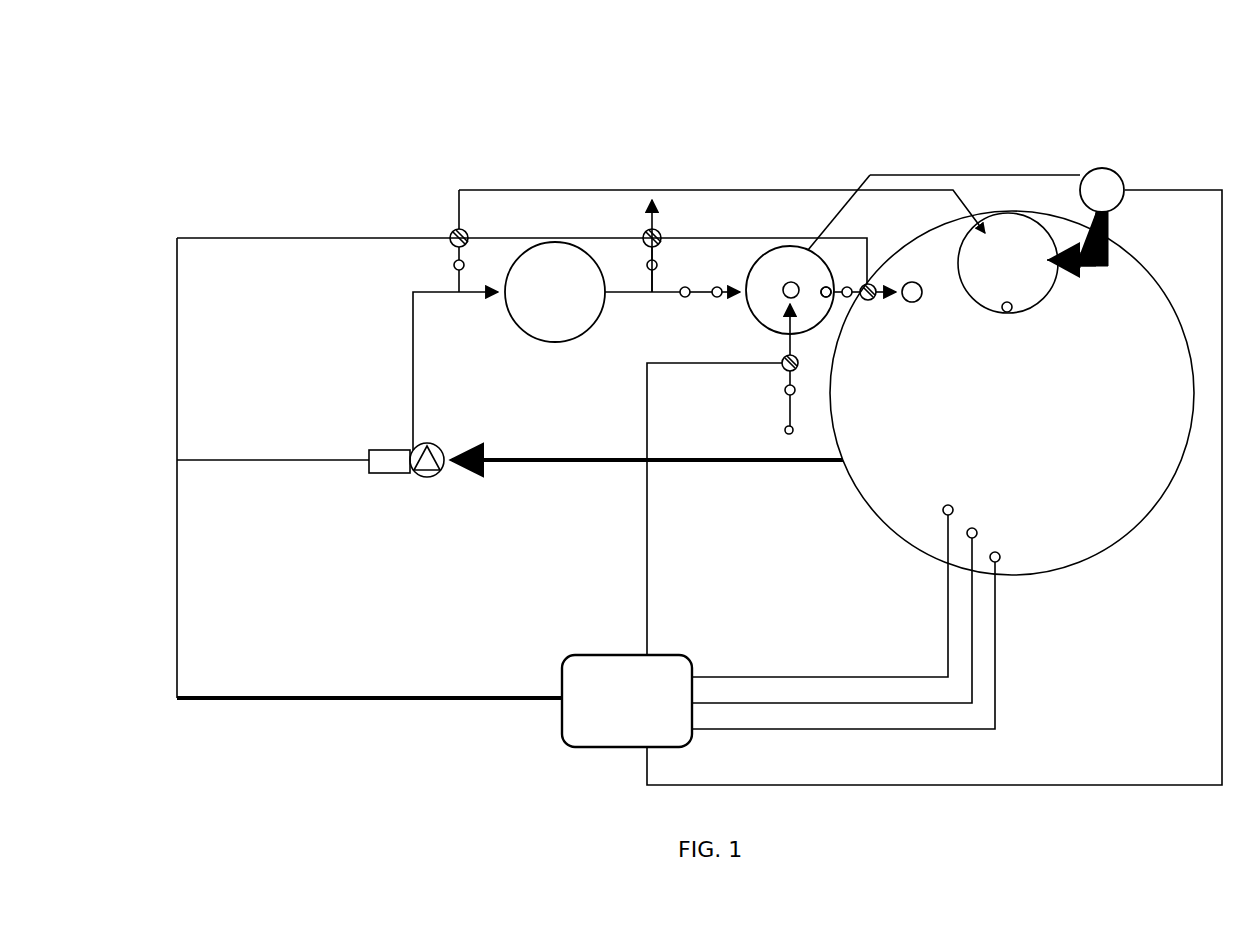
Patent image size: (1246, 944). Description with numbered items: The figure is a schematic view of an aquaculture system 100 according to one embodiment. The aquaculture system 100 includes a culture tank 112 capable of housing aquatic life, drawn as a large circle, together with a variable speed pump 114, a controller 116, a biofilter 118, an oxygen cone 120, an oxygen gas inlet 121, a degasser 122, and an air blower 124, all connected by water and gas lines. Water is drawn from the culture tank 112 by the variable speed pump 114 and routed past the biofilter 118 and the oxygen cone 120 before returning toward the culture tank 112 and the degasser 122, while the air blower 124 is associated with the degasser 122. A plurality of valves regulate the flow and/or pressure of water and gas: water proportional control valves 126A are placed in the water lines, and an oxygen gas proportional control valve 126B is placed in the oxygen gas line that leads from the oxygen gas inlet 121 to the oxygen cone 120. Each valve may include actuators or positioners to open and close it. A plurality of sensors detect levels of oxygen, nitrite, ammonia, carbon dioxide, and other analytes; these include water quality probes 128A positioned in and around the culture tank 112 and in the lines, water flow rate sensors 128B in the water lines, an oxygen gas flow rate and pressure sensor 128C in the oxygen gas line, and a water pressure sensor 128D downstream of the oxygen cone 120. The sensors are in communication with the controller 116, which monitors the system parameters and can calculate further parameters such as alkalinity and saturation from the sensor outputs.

The aquaculture system 100 is at (527, 94).
The culture tank 112 is at (1012, 393).
The variable speed pump 114 is at (382, 446).
The controller 116 is at (627, 701).
The biofilter 118 is at (555, 292).
The oxygen cone 120 is at (790, 290).
The oxygen gas inlet 121 is at (784, 430).
The degasser 122 is at (1010, 270).
The air blower 124 is at (1085, 223).
The water proportional control valve 126A is at (467, 231).
The oxygen gas proportional control valve 126B is at (783, 368).
The water quality probe 128A is at (683, 298).
The water flow rate sensor 128B is at (453, 265).
The oxygen gas flow rate and pressure sensor 128C is at (793, 395).
The water pressure sensor 128D is at (829, 287).